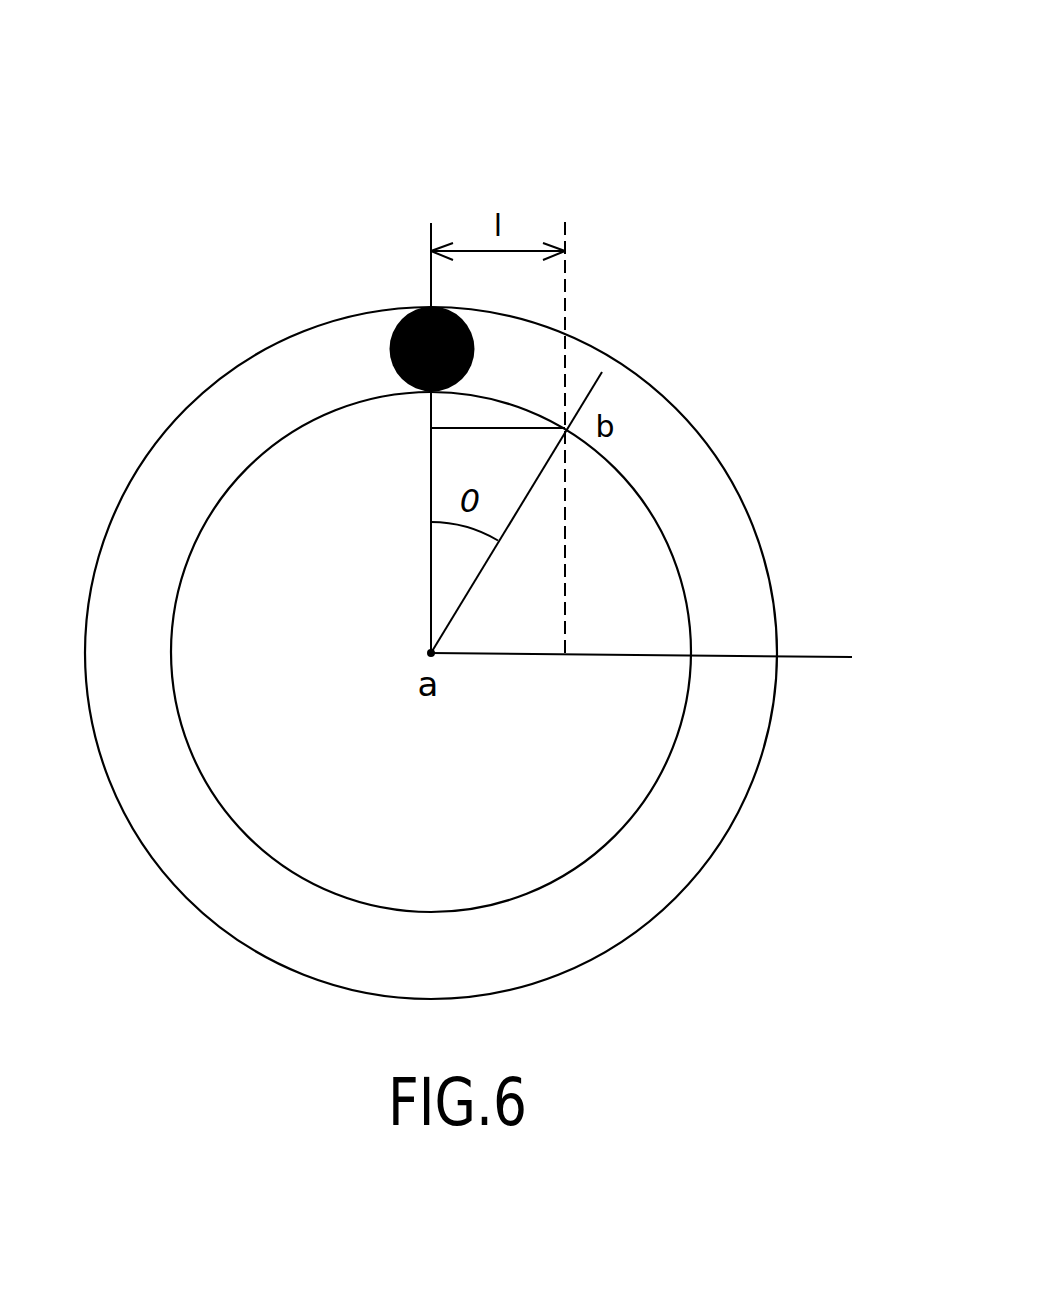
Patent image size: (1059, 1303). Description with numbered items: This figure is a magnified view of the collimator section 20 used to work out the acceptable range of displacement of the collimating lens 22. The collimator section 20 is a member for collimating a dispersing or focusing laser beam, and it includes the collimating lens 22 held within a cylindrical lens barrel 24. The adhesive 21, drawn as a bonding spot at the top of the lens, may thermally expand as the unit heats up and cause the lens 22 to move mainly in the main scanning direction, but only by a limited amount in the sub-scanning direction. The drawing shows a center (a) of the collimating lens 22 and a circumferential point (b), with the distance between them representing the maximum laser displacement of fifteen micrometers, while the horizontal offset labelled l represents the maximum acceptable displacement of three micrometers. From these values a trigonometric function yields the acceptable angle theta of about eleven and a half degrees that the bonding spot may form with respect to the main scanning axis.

The collimator section 20 is at (732, 153).
The adhesive 21 is at (387, 345).
The collimating lens 22 is at (580, 753).
The cylindrical lens barrel 24 is at (27, 461).